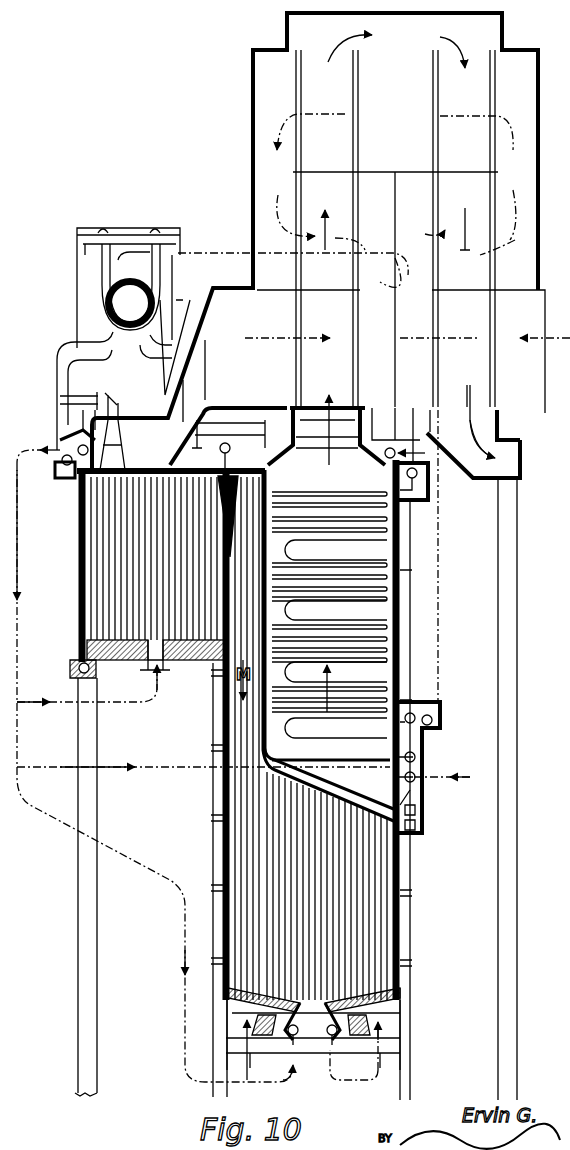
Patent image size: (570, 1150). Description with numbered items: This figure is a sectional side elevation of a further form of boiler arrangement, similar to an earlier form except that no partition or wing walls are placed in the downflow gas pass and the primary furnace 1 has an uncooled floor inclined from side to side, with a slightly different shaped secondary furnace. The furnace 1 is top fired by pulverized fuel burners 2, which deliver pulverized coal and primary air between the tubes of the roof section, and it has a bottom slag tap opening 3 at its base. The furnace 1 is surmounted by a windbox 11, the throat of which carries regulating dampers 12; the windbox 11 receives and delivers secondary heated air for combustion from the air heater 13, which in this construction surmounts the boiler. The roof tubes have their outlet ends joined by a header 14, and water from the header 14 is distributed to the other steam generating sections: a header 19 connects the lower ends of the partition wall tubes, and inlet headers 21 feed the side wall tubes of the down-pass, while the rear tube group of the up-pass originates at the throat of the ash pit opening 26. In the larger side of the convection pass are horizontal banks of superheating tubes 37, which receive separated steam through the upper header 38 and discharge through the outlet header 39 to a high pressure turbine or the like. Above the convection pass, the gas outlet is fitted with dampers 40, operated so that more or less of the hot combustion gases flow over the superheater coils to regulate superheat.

The furnace 1 is at (152, 578).
The pulverized fuel burners 2 is at (107, 395).
The bottom slag tap opening 3 is at (156, 645).
The windbox 11 is at (172, 370).
The regulating dampers 12 is at (160, 418).
The air heater 13 is at (409, 160).
The header 14 is at (83, 448).
The header 19 is at (296, 1045).
The inlet headers 21 is at (226, 444).
The ash pit opening 26 is at (310, 1010).
The superheating tubes 37 is at (352, 622).
The upper header 38 is at (417, 474).
The outlet header 39 is at (430, 720).
The dampers 40 is at (340, 437).